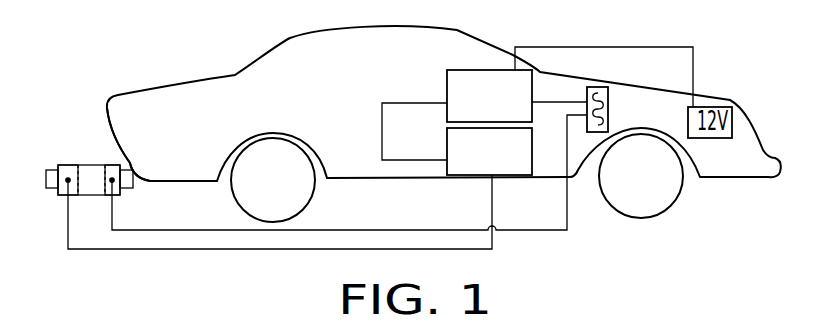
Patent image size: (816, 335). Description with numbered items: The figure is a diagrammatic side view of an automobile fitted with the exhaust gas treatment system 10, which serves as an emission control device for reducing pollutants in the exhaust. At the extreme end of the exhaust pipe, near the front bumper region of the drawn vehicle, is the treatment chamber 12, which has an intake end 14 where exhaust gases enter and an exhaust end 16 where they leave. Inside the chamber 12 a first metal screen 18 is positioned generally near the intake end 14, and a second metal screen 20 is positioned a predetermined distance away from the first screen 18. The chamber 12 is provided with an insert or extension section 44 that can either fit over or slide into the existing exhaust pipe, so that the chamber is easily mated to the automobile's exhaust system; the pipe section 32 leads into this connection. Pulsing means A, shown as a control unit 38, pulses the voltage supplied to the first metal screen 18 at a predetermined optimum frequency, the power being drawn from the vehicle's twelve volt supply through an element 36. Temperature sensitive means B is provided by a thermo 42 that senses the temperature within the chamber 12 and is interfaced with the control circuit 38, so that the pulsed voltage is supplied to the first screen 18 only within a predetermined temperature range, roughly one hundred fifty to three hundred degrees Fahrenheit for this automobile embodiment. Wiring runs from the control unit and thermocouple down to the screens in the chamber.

The system for treating exhaust gases 10 is at (543, 34).
The treatment chamber 12 is at (85, 165).
The intake end 14 is at (121, 195).
The exhaust end 16 is at (62, 196).
The first metal screen 18 is at (106, 196).
The second metal screen 20 is at (73, 165).
The vehicle body 32 is at (165, 183).
The heating element relay 36 is at (688, 113).
The control circuit 38 is at (447, 90).
The thermo 42 is at (447, 143).
The insert or extension section 44 is at (132, 164).
The pulsing means A is at (459, 61).
The temperature sensitive means B is at (459, 187).